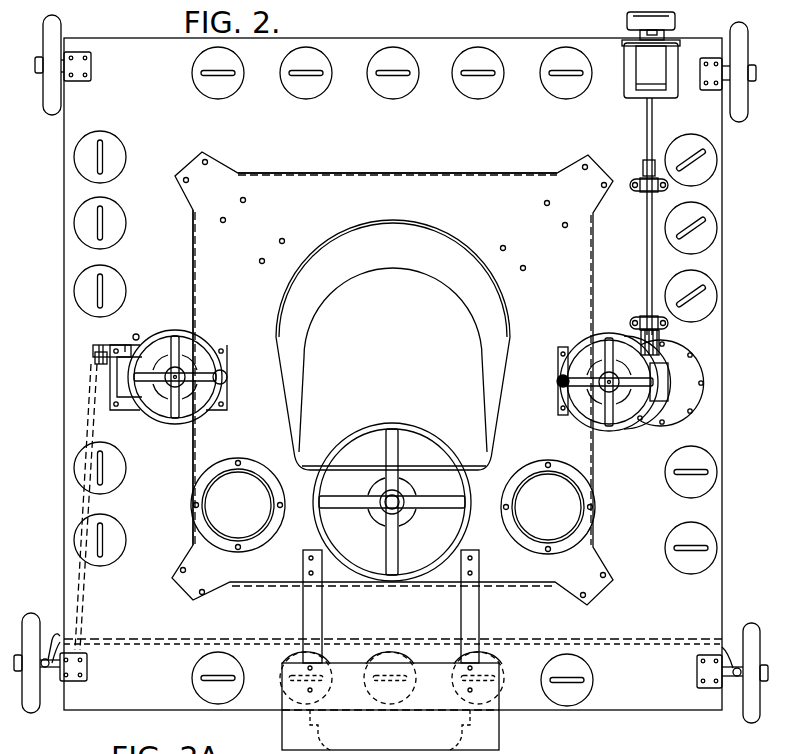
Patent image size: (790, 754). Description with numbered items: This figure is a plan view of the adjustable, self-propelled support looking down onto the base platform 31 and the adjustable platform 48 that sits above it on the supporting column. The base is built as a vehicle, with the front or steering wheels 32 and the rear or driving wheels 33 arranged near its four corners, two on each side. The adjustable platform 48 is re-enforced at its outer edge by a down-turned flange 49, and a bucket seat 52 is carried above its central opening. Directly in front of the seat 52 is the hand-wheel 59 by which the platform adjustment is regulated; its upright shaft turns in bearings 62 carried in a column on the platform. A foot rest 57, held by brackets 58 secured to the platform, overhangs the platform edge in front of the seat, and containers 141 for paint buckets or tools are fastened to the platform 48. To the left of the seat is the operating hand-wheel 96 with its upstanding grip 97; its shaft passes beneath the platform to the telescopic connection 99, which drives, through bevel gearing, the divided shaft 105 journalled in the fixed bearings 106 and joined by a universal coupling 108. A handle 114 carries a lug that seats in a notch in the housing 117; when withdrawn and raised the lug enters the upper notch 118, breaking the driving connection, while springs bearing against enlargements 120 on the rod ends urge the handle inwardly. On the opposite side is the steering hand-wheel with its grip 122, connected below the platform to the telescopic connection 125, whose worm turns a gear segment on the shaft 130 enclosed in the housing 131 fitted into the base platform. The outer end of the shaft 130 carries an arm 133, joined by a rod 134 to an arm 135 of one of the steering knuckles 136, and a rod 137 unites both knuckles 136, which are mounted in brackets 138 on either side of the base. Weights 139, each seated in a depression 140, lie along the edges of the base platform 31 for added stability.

The base platform 31 is at (433, 40).
The front or steering wheels 32 is at (31, 713).
The rear or driving wheels 33 is at (52, 112).
The adjustable platform 48 is at (389, 190).
The down-turned flange 49 is at (310, 174).
The seat 52 is at (393, 345).
The foot rest 57 is at (390, 706).
The brackets 58 is at (323, 620).
The hand-wheel 59 is at (393, 425).
The bearings 62 is at (378, 512).
The operating hand-wheel 96 is at (611, 432).
The upstanding grip 97 is at (560, 382).
The extensible or telescopic connection 99 is at (668, 371).
The divided shaft 105 is at (648, 255).
The fixed bearings 106 is at (640, 192).
The universal coupling 108 is at (644, 170).
The handle 114 is at (677, 16).
The housing 117 is at (626, 41).
The upper notch 118 is at (667, 33).
The enlargements 120 is at (197, 332).
The upstanding grip 122 is at (227, 377).
The extensible or telescopic connection 125 is at (120, 378).
The shaft 130 is at (168, 333).
The housing 131 is at (130, 338).
The arm 133 is at (96, 352).
The rod 134 is at (88, 428).
The arm 135 is at (52, 630).
The steering knuckles 136 is at (86, 677).
The rod 137 is at (147, 642).
The brackets 138 is at (698, 680).
The weights 139 is at (243, 90).
The depression 140 is at (311, 97).
The containers 141 is at (220, 533).